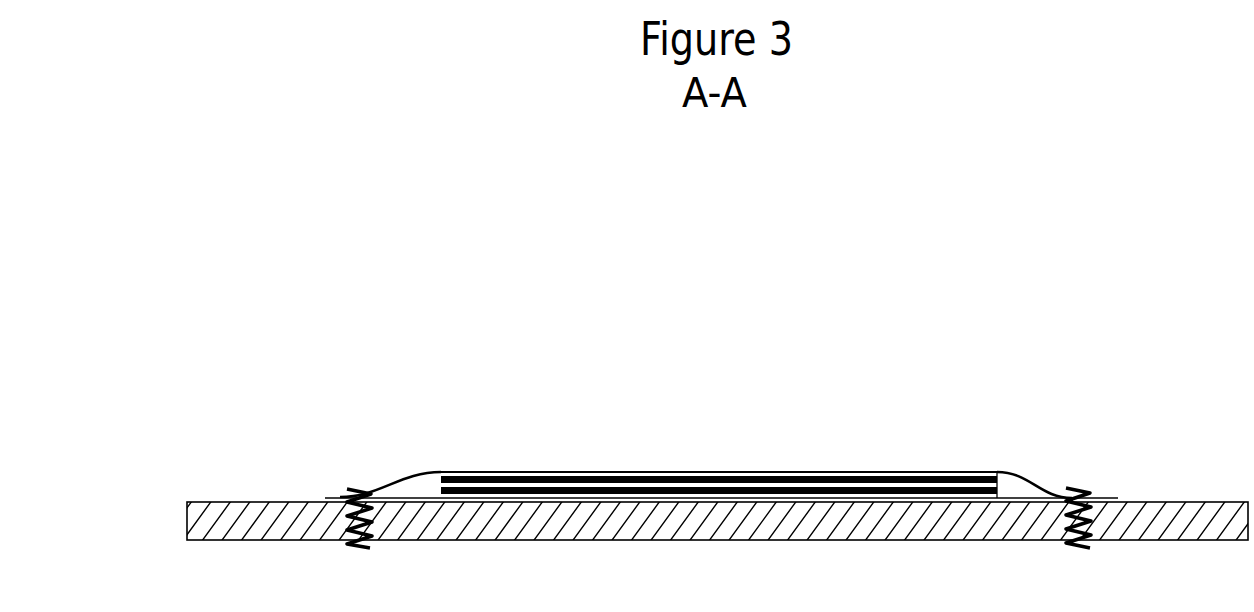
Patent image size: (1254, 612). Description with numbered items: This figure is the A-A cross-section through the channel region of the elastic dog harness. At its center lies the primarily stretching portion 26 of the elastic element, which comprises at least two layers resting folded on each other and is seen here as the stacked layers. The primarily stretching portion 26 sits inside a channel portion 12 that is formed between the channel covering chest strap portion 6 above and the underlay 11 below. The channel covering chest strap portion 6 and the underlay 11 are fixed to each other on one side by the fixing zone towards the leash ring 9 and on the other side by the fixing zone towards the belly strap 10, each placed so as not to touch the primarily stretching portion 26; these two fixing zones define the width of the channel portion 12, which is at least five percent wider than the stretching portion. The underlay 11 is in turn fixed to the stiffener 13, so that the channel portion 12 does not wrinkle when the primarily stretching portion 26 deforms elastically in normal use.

The channel covering chest strap portion 6 is at (440, 470).
The fixing zone towards the leash ring 9 is at (362, 490).
The fixing zone towards the belly strap 10 is at (1082, 490).
The underlay 11 is at (1010, 492).
The channel portion 12 is at (420, 484).
The stiffener 13 is at (588, 540).
The primarily stretching portion 26 is at (780, 492).